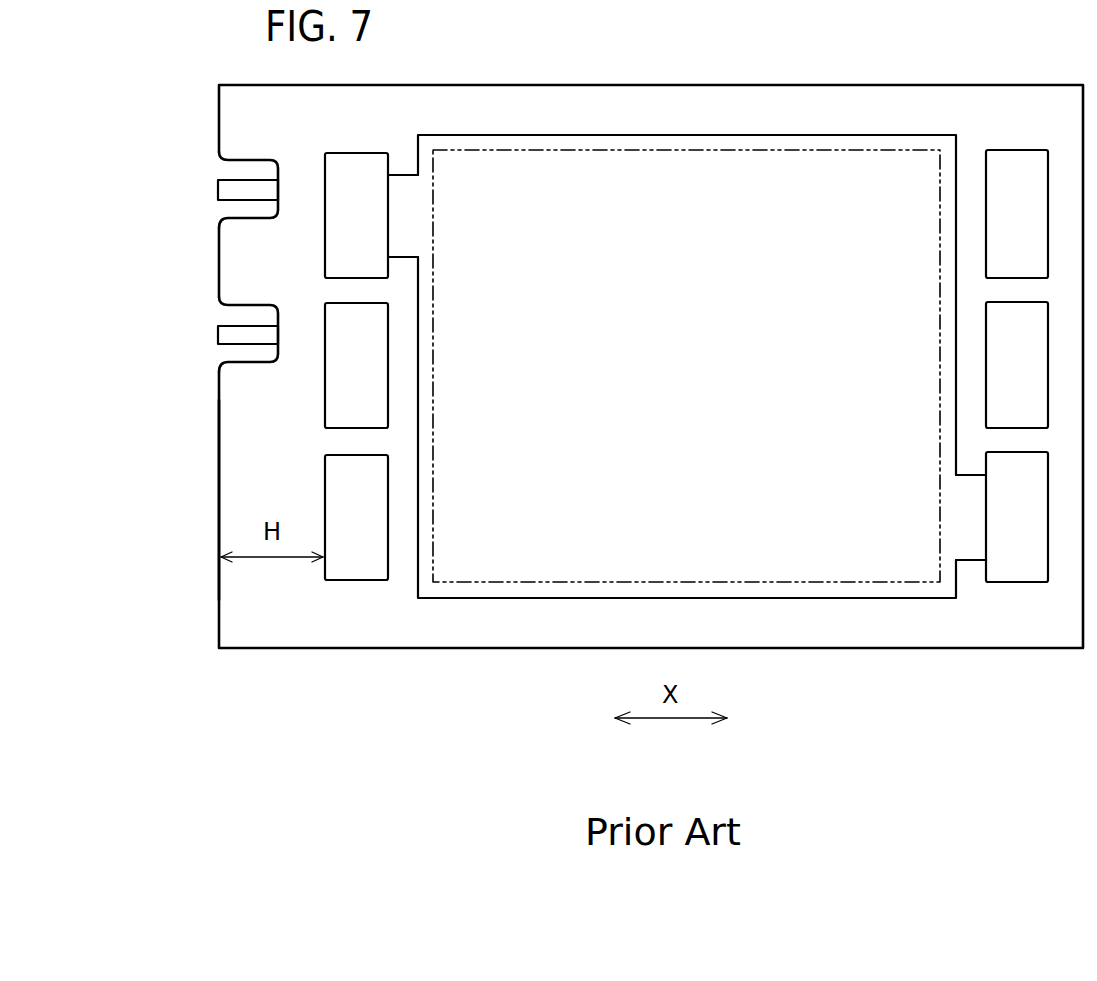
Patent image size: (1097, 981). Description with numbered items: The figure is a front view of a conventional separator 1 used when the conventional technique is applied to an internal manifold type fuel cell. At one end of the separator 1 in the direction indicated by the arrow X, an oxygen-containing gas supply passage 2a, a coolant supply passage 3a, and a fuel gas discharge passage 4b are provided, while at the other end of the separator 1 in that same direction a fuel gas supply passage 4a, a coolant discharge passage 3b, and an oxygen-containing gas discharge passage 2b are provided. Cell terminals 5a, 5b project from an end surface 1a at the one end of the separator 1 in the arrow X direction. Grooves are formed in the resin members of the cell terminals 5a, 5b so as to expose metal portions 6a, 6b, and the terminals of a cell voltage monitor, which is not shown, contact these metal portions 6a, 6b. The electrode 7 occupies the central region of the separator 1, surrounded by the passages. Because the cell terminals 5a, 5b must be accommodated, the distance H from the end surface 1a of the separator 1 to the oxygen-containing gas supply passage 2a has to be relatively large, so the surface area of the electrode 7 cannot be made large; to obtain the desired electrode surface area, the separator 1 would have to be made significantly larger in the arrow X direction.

The separator 1 is at (970, 56).
The end surface 1a is at (218, 460).
The oxygen-containing gas supply passage 2a is at (356, 215).
The oxygen-containing gas discharge passage 2b is at (1017, 517).
The coolant supply passage 3a is at (356, 365).
The coolant discharge passage 3b is at (1017, 365).
The fuel gas supply passage 4a is at (1017, 214).
The fuel gas discharge passage 4b is at (356, 517).
The cell terminal 5a is at (197, 152).
The cell terminal 5b is at (197, 300).
The metal portion 6a is at (240, 170).
The metal portion 6b is at (240, 314).
The electrode 7 is at (626, 170).